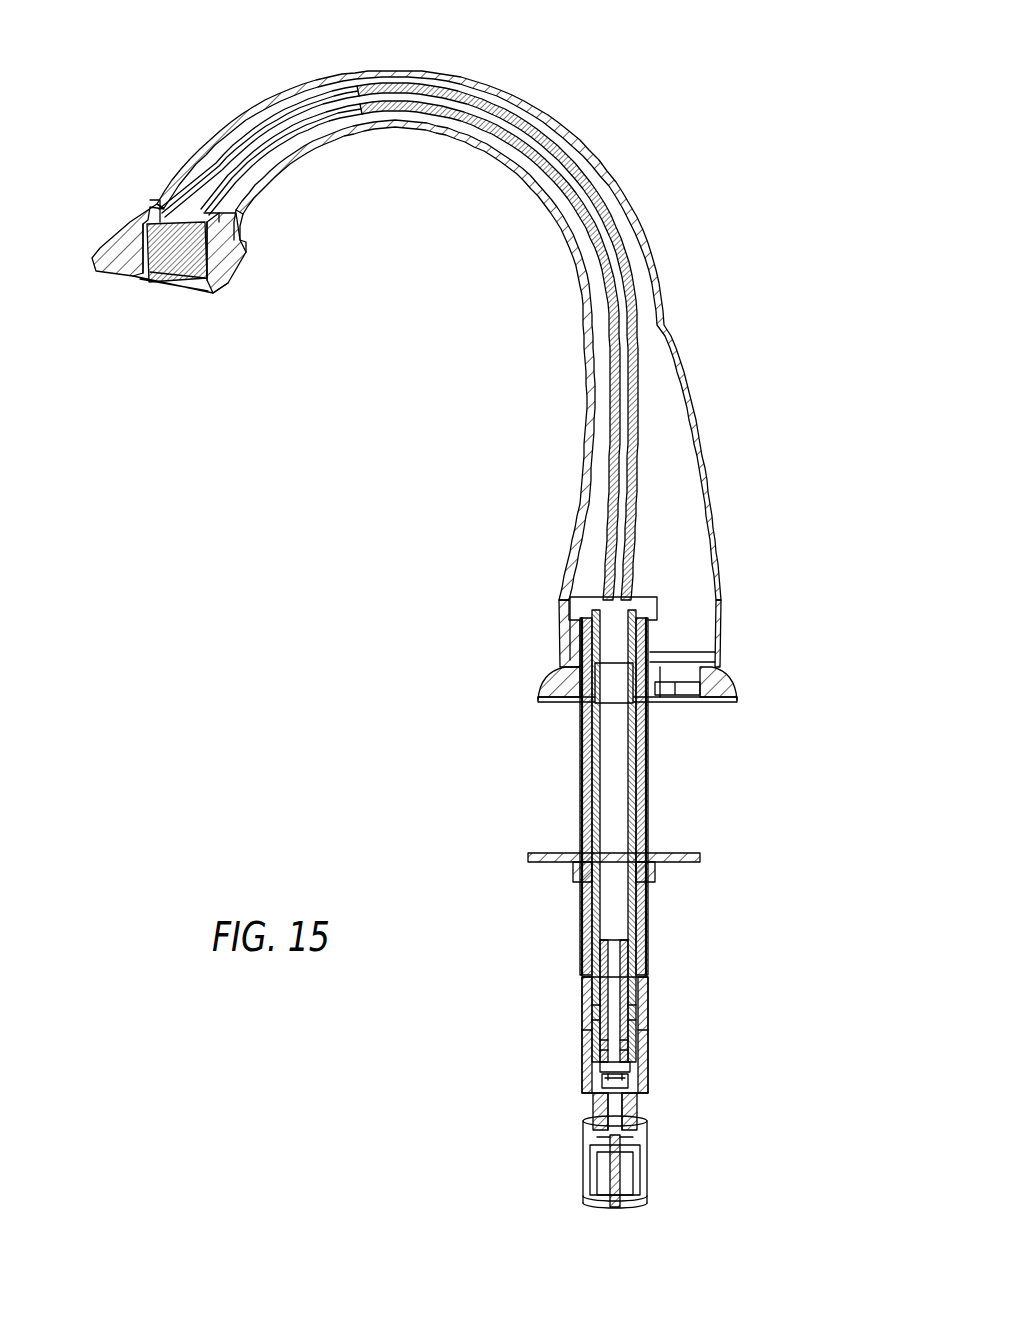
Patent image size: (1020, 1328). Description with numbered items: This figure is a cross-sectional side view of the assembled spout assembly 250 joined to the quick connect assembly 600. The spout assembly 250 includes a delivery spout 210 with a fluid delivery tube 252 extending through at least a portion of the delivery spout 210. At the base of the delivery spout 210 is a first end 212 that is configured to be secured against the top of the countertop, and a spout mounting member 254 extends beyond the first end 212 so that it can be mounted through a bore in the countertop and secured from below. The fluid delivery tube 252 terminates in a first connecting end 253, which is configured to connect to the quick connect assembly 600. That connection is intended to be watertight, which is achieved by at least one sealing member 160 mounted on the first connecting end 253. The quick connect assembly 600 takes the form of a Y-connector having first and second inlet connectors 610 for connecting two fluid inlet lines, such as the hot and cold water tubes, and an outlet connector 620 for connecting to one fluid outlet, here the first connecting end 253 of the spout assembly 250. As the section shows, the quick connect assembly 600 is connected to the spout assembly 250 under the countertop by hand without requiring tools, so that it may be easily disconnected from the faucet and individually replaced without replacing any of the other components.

The spout assembly 250 is at (694, 215).
The delivery spout 210 is at (497, 92).
The fluid delivery tube 252 is at (640, 397).
The first end 212 is at (733, 693).
The spout mounting member 254 is at (648, 935).
The outlet connector 620 is at (585, 988).
The sealing member 160 is at (634, 1038).
The first connecting end 253 is at (618, 1055).
The quick connect assembly 600 is at (573, 1138).
The inlet connectors 610 is at (648, 1178).